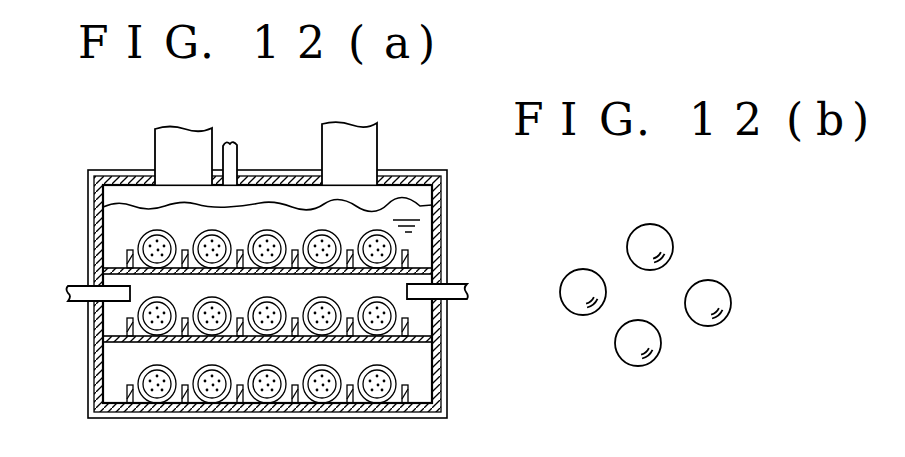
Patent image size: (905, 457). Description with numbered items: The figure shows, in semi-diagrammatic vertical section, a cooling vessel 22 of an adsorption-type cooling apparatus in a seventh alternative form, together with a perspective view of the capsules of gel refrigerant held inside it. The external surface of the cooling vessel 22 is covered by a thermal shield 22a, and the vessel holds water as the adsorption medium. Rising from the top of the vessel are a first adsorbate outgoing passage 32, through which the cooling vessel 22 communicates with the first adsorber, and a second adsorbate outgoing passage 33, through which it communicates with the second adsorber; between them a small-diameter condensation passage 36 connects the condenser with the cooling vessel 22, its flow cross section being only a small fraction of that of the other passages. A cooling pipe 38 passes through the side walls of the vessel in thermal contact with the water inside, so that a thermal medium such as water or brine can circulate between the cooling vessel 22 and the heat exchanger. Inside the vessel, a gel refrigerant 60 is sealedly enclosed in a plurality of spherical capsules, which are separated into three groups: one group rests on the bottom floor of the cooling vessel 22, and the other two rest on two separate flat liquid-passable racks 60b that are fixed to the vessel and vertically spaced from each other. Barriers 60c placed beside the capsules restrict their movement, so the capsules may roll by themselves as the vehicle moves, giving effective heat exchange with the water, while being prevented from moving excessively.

The cooling vessel 22 is at (404, 162).
The thermal shield 22a is at (90, 216).
The first adsorbate outgoing passage 32 is at (175, 140).
The second adsorbate outgoing passage 33 is at (363, 157).
The condensation passage 36 is at (235, 163).
The cooling pipe 38 is at (450, 283).
The gel refrigerant 60 is at (380, 388).
The liquid-passable rack 60b is at (125, 262).
The barrier 60c is at (403, 322).